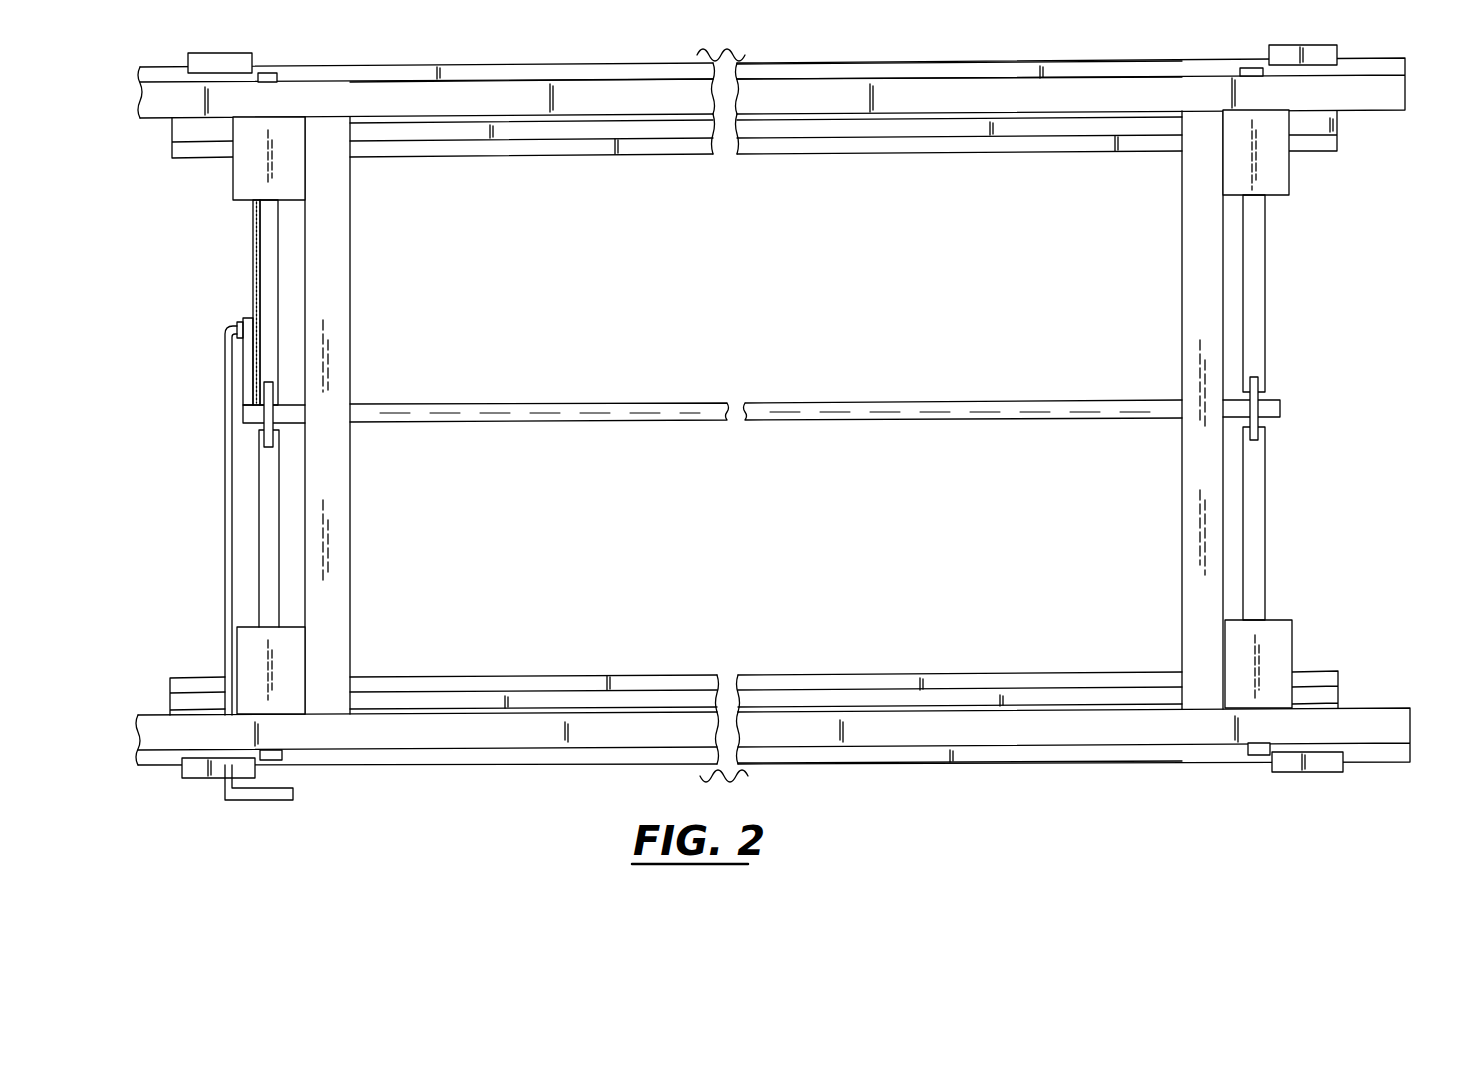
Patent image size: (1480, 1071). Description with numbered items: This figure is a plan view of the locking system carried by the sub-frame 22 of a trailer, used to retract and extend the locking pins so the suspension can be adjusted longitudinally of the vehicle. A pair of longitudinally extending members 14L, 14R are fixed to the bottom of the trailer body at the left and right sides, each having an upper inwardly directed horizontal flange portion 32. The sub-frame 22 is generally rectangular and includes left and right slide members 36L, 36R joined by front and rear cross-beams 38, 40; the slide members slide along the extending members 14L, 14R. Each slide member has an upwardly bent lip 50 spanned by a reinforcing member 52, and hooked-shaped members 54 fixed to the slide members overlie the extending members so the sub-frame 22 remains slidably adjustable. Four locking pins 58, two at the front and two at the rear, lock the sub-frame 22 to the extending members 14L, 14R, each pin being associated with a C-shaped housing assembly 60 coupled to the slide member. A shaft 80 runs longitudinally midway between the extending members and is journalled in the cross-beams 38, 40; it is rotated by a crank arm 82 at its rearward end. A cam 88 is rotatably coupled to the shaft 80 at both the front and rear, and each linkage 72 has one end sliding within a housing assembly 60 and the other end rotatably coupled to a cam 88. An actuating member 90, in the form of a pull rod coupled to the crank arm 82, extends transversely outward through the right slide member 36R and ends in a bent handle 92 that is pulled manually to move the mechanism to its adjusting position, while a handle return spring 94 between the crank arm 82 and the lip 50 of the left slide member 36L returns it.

The extending member 14L is at (1410, 81).
The extending member 14R is at (1416, 725).
The sub-frame 22 is at (1160, 56).
The upper inwardly directed horizontal flange portion 32 is at (463, 90).
The left slide member 36L is at (948, 58).
The right slide member 36R is at (1020, 766).
The front cross-beam 38 is at (1182, 234).
The rear cross-beam 40 is at (350, 272).
The lip 50 is at (512, 151).
The reinforcing member 52 is at (866, 130).
The hooked-shaped member 54 is at (246, 53).
The locking pin 58 is at (273, 73).
The housing assembly 60 is at (227, 188).
The linkage 72 is at (272, 346).
The shaft 80 is at (620, 400).
The crank arm 82 is at (251, 382).
The cam 88 is at (256, 424).
The actuating member 90 is at (225, 486).
The handle 92 is at (262, 800).
The handle return spring 94 is at (253, 264).